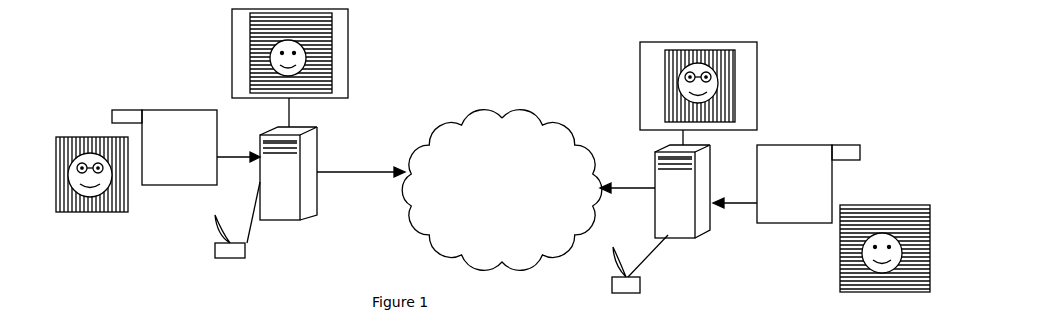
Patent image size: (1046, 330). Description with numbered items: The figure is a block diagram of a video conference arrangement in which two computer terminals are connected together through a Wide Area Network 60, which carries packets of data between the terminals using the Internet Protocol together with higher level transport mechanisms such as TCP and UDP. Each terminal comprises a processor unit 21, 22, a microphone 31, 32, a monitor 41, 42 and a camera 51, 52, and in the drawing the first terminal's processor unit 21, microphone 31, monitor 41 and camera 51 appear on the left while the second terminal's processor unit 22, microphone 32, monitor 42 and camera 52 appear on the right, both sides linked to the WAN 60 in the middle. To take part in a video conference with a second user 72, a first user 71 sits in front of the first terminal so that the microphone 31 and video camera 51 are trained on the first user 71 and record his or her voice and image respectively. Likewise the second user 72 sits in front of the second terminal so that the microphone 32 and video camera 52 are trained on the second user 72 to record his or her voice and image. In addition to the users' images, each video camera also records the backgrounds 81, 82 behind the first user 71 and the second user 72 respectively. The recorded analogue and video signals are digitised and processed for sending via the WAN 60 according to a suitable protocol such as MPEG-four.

The processor unit 21 is at (305, 202).
The processor unit 22 is at (707, 227).
The microphone 31 is at (245, 257).
The microphone 32 is at (640, 287).
The monitor 41 is at (350, 65).
The monitor 42 is at (760, 73).
The camera 51 is at (143, 108).
The camera 52 is at (802, 145).
The Wide Area Network 60 is at (492, 113).
The first user 71 is at (128, 197).
The second user 72 is at (848, 257).
The background 81 is at (70, 137).
The background 82 is at (883, 203).